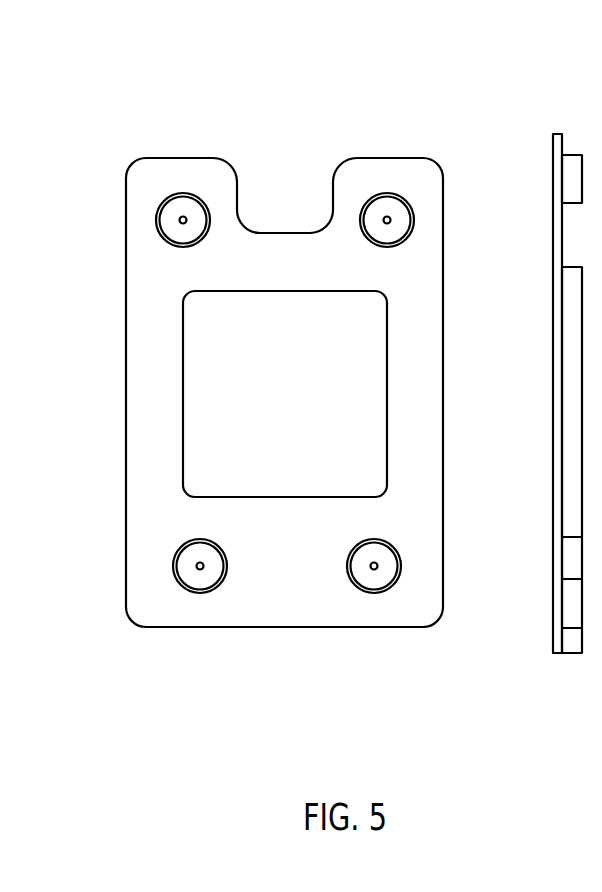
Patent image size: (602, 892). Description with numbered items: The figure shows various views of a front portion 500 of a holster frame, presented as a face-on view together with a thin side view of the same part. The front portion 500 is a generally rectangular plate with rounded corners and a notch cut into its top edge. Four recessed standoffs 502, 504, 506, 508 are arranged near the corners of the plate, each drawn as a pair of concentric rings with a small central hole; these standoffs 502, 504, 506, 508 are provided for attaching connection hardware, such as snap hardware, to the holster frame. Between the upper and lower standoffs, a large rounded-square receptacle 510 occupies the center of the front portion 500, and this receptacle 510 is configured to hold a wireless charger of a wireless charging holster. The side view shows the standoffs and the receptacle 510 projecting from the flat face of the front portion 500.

The front portion of a holster frame 500 is at (152, 405).
The recessed standoff 502 is at (175, 205).
The recessed standoff 504 is at (192, 584).
The recessed standoff 506 is at (378, 584).
The recessed standoff 508 is at (381, 207).
The receptacle 510 is at (285, 394).